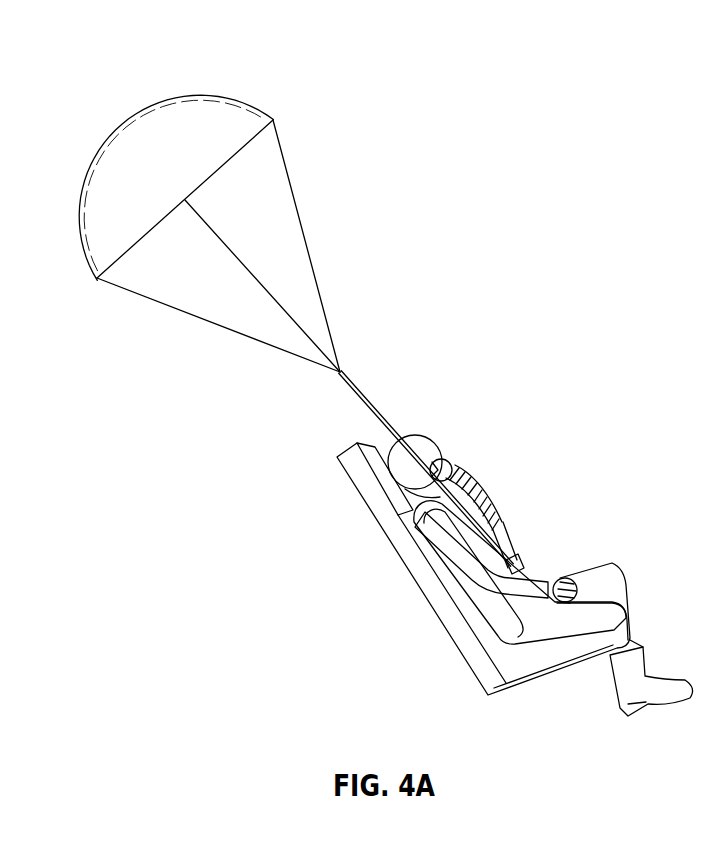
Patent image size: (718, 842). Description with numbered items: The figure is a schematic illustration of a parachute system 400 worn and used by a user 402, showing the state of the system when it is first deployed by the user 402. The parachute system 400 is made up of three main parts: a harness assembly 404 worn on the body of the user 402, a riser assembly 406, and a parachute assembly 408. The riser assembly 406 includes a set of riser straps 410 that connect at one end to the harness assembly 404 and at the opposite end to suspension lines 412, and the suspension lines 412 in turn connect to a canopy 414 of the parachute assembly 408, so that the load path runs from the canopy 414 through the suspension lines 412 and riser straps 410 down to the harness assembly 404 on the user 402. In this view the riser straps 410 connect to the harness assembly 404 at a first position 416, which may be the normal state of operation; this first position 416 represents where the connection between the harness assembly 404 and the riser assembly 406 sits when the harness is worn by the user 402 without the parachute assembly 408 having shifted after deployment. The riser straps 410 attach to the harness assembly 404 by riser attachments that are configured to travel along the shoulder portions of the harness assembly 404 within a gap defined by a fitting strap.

The parachute system 400 is at (318, 83).
The user 402 is at (607, 583).
The harness assembly 404 is at (508, 543).
The riser assembly 406 is at (458, 423).
The parachute assembly 408 is at (293, 173).
The riser straps 410 is at (368, 395).
The suspension lines 412 is at (317, 273).
The canopy 414 is at (228, 115).
The first position 416 is at (500, 515).